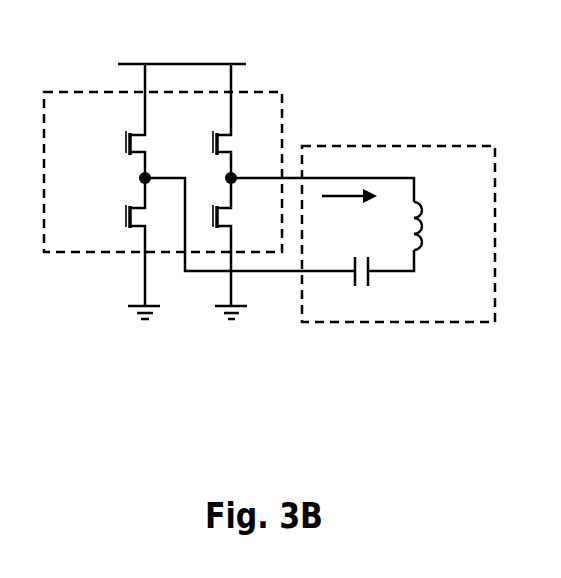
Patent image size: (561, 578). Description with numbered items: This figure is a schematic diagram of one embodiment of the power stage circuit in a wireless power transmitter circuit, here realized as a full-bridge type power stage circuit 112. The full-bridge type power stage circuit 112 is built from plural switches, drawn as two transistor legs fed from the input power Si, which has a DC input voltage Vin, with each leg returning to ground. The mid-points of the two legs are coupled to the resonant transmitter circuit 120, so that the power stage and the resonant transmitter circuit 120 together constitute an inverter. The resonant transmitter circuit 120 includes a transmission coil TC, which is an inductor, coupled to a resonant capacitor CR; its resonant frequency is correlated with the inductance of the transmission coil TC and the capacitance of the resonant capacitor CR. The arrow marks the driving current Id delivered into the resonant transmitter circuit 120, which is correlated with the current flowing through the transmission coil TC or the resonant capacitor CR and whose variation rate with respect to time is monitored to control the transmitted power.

The full-bridge type power stage circuit 112 is at (87, 247).
The resonant transmitter circuit 120 is at (398, 234).
The transmission coil TC is at (402, 226).
The resonant capacitor CR is at (360, 285).
The driving current Id is at (349, 206).
The DC input voltage Vin is at (182, 48).